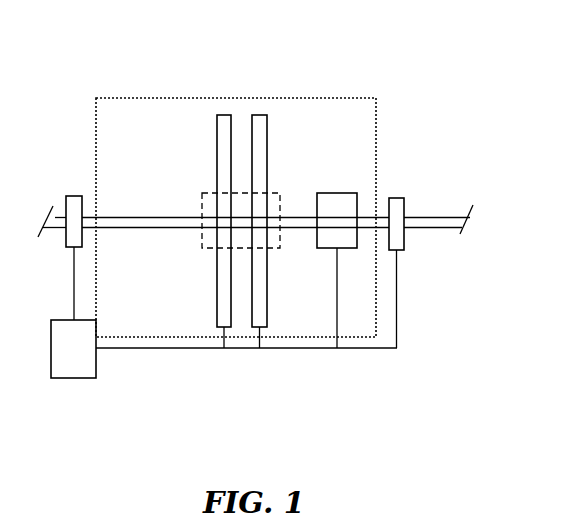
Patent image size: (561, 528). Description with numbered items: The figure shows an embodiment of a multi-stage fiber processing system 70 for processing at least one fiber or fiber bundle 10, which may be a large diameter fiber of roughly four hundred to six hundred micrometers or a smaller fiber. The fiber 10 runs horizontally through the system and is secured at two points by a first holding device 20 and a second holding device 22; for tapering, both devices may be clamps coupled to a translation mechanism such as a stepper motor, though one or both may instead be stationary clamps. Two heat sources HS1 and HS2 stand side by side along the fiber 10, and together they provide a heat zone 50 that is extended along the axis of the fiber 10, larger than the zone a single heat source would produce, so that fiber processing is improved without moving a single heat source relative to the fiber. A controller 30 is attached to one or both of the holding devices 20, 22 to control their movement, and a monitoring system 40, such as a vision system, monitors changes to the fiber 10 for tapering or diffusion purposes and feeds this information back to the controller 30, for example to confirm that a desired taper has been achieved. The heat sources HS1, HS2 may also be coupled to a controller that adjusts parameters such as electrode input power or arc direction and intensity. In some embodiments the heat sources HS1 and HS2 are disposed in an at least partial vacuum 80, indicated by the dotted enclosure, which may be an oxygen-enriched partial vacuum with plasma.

The fiber 10 is at (178, 218).
The first holding device 20 is at (80, 197).
The second holding device 22 is at (393, 198).
The controller 30 is at (68, 370).
The monitoring system 40 is at (347, 197).
The heat zone 50 is at (190, 258).
The multi-stage fiber processing system 70 is at (467, 81).
The partial vacuum 80 is at (128, 130).
The first heat source HS1 is at (222, 115).
The second heat source HS2 is at (257, 115).